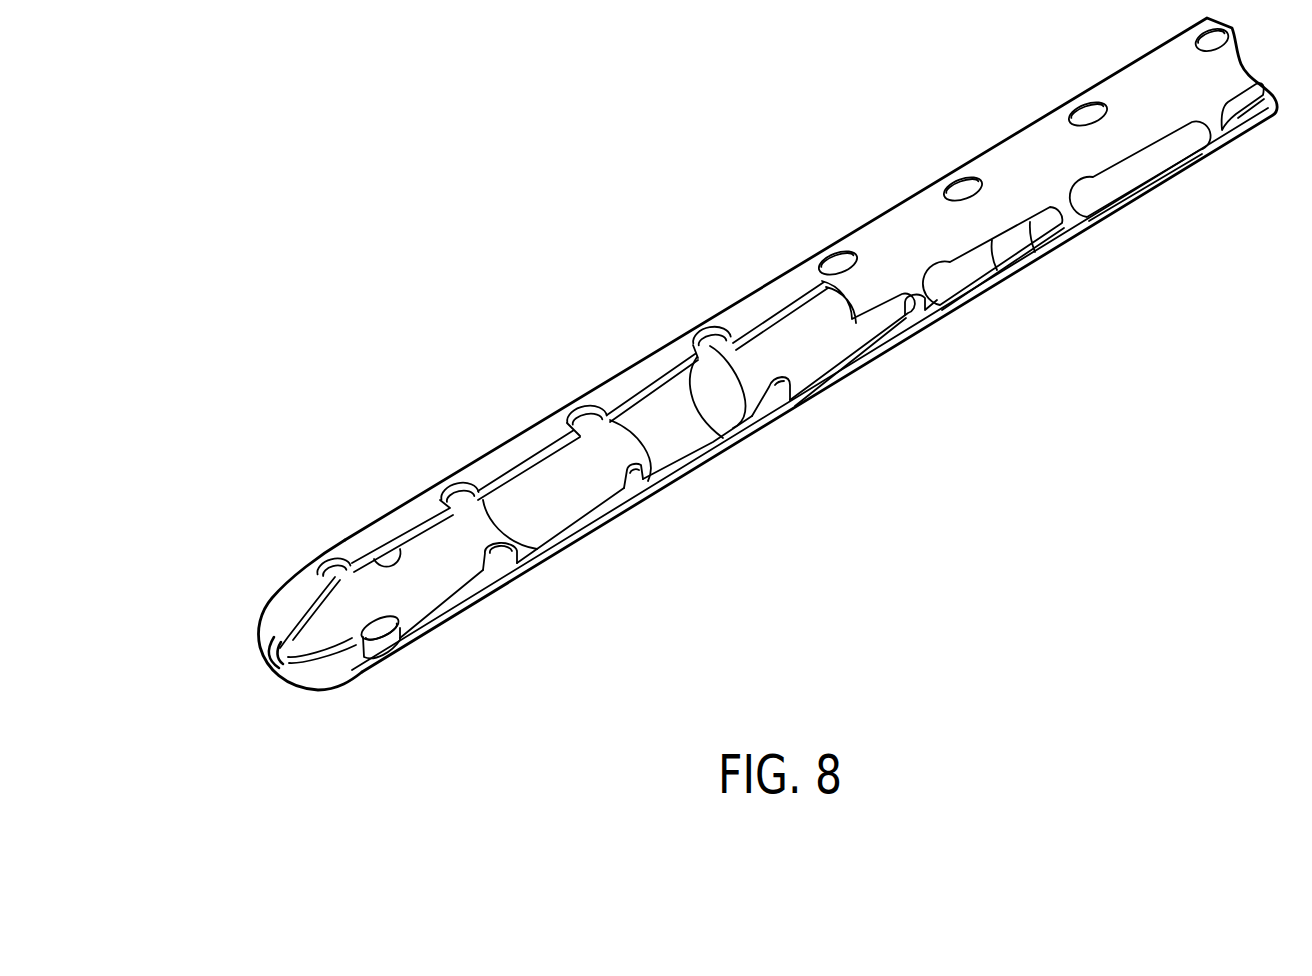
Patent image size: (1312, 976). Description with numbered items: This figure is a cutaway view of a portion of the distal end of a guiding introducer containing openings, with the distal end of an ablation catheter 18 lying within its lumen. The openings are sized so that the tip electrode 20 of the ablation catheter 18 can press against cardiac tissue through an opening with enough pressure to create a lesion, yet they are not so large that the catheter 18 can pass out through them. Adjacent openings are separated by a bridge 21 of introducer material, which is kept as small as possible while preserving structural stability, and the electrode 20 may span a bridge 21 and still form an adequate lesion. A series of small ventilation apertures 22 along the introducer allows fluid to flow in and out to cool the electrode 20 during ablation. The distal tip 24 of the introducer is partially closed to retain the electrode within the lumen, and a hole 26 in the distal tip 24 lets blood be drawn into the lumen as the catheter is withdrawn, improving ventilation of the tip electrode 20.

The ablation catheter 18 is at (833, 349).
The tip electrode 20 is at (575, 493).
The bridge 21 is at (1217, 133).
The ventilation apertures 22 is at (1092, 116).
The distal tip 24 is at (270, 624).
The hole 26 is at (280, 656).